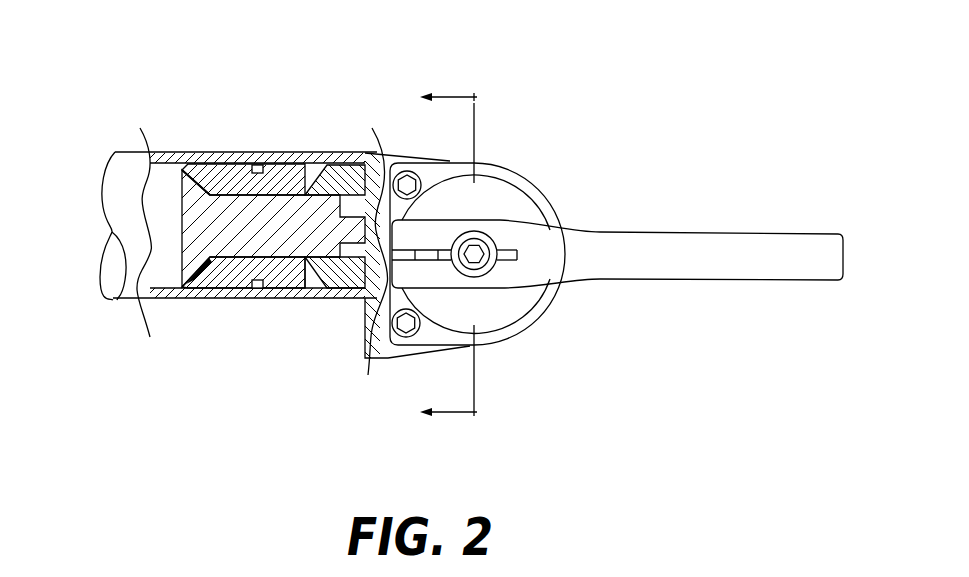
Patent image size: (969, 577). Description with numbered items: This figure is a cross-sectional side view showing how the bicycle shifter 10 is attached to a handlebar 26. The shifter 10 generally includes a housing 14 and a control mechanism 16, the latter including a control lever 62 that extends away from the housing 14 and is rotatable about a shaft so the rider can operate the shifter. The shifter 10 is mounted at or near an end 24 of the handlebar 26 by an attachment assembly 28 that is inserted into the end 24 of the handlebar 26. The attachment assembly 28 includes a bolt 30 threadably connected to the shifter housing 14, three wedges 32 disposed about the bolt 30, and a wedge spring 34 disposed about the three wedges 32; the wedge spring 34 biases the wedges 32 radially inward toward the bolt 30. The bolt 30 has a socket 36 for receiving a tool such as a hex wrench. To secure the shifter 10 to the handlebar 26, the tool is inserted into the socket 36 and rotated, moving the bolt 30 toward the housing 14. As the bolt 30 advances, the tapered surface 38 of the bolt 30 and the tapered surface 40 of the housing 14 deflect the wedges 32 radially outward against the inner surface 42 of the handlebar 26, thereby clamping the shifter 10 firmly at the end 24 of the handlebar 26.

The bicycle shifter 10 is at (543, 115).
The housing 14 is at (348, 163).
The control mechanism 16 is at (600, 322).
The end 24 is at (350, 298).
The handlebar 26 is at (215, 300).
The attachment assembly 28 is at (298, 115).
The bolt 30 is at (183, 190).
The wedges 32 is at (222, 173).
The wedge spring 34 is at (257, 170).
The socket 36 is at (333, 290).
The tapered surface 38 is at (190, 270).
The tapered surface 40 is at (290, 298).
The inner surface 42 is at (170, 177).
The control lever 62 is at (633, 248).